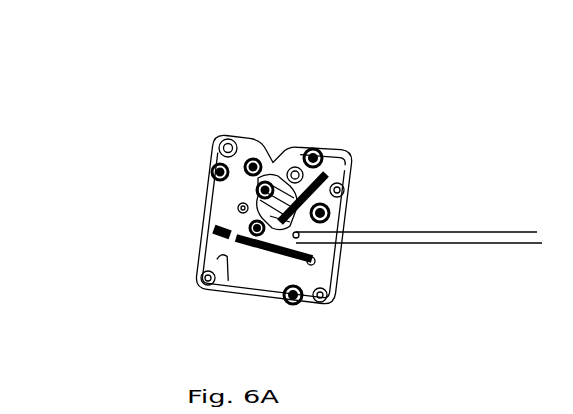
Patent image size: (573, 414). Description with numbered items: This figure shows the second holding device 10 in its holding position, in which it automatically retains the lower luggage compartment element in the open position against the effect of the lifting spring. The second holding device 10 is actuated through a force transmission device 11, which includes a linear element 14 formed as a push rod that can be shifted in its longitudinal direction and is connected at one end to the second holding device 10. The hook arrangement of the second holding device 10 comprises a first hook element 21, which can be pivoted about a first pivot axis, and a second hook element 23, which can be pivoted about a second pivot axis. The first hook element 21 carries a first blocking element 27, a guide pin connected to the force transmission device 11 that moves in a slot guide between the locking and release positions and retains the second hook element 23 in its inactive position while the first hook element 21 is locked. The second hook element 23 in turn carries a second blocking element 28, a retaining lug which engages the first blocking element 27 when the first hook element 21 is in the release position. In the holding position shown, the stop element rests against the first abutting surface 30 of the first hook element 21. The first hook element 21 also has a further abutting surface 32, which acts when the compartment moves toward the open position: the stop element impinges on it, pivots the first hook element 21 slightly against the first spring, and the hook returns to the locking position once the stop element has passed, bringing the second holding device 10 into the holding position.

The second holding device 10 is at (188, 105).
The force transmission device 11 is at (499, 210).
The linear element 14 is at (432, 240).
The first hook element 21 is at (238, 208).
The second hook element 23 is at (297, 238).
The first blocking element 27 is at (238, 240).
The second blocking element 28 is at (222, 257).
The first abutting surface 30 is at (296, 163).
The further abutting surface 32 is at (279, 176).